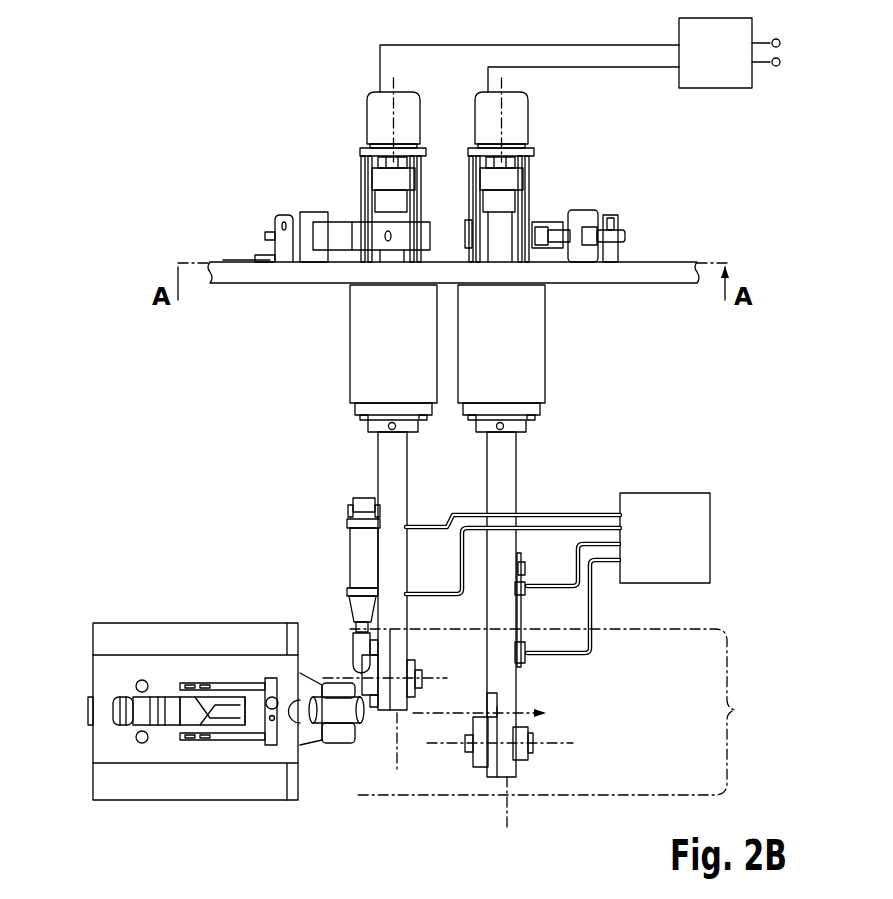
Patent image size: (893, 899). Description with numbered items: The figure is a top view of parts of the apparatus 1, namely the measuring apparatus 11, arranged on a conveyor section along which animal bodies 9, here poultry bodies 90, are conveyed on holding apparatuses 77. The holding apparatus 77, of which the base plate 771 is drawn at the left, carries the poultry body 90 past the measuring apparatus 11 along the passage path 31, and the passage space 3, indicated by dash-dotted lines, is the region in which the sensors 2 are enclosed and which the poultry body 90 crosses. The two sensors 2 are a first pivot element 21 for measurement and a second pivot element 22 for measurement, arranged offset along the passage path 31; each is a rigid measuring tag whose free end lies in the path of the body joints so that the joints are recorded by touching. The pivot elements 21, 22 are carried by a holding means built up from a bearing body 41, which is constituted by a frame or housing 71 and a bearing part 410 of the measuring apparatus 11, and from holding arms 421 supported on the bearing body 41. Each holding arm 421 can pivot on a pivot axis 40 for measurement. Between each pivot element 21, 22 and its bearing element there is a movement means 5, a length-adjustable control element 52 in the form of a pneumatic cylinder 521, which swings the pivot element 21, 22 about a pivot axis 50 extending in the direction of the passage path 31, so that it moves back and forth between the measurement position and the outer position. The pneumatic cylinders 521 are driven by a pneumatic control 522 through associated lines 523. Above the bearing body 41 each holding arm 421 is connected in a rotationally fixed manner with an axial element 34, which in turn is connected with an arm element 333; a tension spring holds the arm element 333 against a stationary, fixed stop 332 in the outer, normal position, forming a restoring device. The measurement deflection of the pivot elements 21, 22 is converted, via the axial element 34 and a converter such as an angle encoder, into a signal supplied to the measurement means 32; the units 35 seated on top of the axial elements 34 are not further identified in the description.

The device 1 is at (221, 67).
The measuring apparatus 11 is at (258, 98).
The measurement means 32 is at (716, 88).
The drive motor 35 is at (358, 138).
The axial element 34 is at (372, 215).
The bearing body 41 is at (434, 227).
The frame or housing 71 is at (215, 272).
The stationary fixed stop 332 is at (318, 240).
The arm element 333 is at (330, 236).
The bearing part 410 is at (366, 367).
The holding arm 421 is at (378, 462).
The pneumatic control 522 is at (710, 535).
The lines 523 is at (585, 515).
The length-adjustable control element 52 is at (453, 597).
The pneumatic cylinder 521 is at (358, 553).
The movement means 5 is at (326, 533).
The animal body 9 is at (314, 658).
The poultry body 90 is at (320, 670).
The holding apparatus 77 is at (191, 731).
The base plate 771 is at (100, 680).
The sensor 2 is at (382, 710).
The first pivot element for measurement 21 is at (366, 703).
The second pivot element for measurement 22 is at (490, 780).
The pivot axis for moving out 50 is at (437, 678).
The passage path 31 is at (437, 714).
The pivot axis for measurement 40 is at (397, 768).
The passage space 3 is at (555, 712).